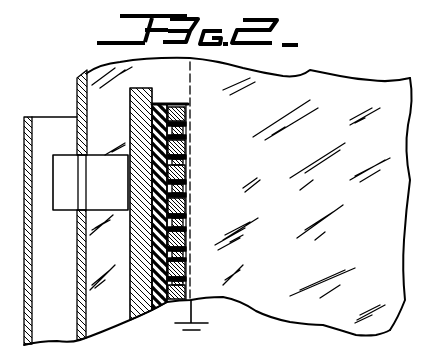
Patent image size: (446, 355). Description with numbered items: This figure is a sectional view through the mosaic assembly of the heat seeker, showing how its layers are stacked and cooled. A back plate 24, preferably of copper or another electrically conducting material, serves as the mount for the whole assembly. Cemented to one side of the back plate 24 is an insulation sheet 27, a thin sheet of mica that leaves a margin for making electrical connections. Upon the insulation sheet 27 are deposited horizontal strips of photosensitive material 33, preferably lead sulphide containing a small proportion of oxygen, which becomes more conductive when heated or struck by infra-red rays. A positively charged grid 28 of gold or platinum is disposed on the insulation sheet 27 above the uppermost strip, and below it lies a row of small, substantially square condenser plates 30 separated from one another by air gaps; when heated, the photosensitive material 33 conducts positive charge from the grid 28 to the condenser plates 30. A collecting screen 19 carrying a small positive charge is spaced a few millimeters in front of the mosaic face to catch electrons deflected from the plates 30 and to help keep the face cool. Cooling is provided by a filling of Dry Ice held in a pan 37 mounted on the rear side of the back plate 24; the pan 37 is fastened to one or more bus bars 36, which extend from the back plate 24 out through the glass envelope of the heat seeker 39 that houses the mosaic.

The collecting screen 19 is at (197, 312).
The back plate 24 is at (143, 88).
The insulation sheet 27 is at (190, 110).
The positively charged grid 28 is at (196, 125).
The condenser plates 30 is at (190, 171).
The photosensitive material 33 is at (192, 142).
The bus bars 36 is at (78, 228).
The pan 37 is at (43, 126).
The glass envelope of heat seeker 39 is at (381, 85).